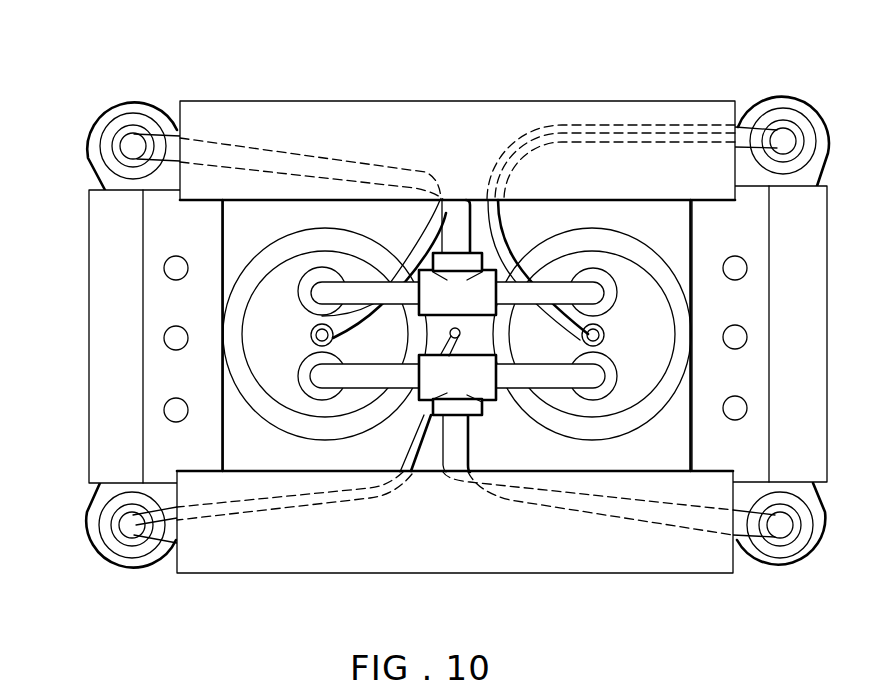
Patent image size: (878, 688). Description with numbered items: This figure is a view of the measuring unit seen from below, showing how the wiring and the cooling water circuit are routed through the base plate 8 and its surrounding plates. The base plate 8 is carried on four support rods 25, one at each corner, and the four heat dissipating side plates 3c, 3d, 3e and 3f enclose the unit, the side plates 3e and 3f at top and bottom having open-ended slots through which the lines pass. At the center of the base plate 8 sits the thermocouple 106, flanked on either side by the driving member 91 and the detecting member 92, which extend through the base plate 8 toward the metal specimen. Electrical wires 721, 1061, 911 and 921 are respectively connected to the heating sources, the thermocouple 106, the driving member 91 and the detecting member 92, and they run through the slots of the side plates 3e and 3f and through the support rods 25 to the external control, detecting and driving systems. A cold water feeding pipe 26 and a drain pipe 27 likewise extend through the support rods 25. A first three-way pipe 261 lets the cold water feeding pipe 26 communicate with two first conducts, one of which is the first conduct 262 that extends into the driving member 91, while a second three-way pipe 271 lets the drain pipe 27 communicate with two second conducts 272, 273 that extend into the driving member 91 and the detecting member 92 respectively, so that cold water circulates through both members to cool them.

The support rod 25 is at (130, 133).
The base plate 8 is at (172, 117).
The cold water feeding pipe 26 is at (273, 150).
The first three-way pipe 261 is at (430, 265).
The heat dissipating side plate 3e is at (466, 108).
The electrical wire 921 is at (514, 130).
The electrical wire 911 is at (567, 140).
The first conduct 262 is at (321, 284).
The detecting member 92 is at (252, 312).
The driving member 91 is at (652, 307).
The heat dissipating side plate 3c is at (105, 372).
The heat dissipating side plate 3d is at (810, 357).
The thermocouple 106 is at (440, 334).
The second conduct 273 is at (327, 380).
The second conduct 272 is at (577, 380).
The electrical wire 721 is at (164, 534).
The electrical wire 1061 is at (305, 503).
The second three-way pipe 271 is at (437, 415).
The heat dissipating side plate 3f is at (505, 560).
The drain pipe 27 is at (625, 508).